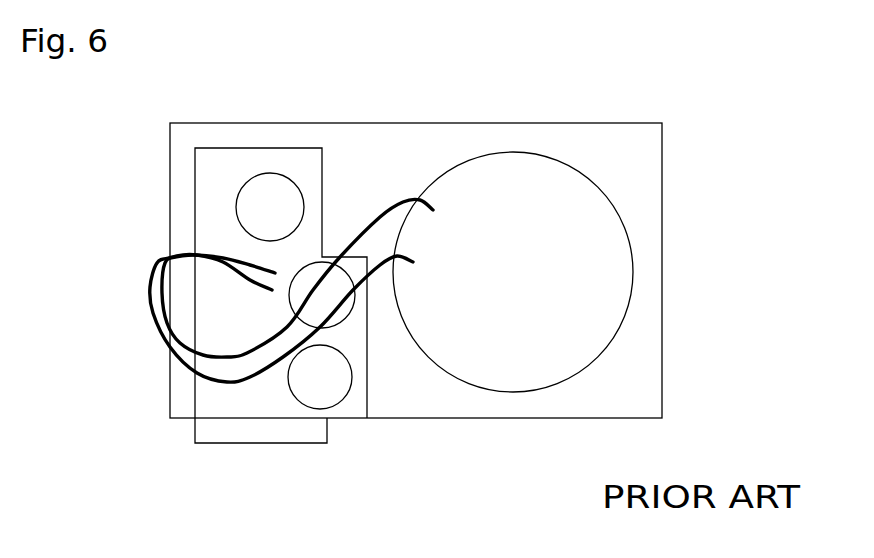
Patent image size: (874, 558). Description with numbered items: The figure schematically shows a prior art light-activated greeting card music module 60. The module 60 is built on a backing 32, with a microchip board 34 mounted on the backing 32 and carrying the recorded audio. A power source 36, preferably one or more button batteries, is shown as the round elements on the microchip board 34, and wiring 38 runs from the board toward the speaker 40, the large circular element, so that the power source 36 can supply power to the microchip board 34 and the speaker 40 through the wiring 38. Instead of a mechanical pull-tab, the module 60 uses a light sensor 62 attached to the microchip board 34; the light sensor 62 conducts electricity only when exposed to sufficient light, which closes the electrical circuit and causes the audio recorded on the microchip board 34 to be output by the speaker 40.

The light-activated greeting card music module 60 is at (756, 117).
The backing 32 is at (616, 147).
The microchip board 34 is at (212, 166).
The power source 36 is at (312, 277).
The wiring 38 is at (215, 355).
The speaker 40 is at (592, 286).
The light sensor 62 is at (247, 430).